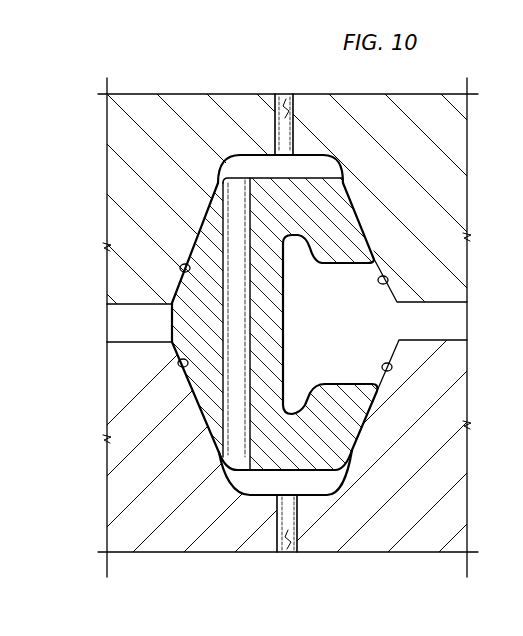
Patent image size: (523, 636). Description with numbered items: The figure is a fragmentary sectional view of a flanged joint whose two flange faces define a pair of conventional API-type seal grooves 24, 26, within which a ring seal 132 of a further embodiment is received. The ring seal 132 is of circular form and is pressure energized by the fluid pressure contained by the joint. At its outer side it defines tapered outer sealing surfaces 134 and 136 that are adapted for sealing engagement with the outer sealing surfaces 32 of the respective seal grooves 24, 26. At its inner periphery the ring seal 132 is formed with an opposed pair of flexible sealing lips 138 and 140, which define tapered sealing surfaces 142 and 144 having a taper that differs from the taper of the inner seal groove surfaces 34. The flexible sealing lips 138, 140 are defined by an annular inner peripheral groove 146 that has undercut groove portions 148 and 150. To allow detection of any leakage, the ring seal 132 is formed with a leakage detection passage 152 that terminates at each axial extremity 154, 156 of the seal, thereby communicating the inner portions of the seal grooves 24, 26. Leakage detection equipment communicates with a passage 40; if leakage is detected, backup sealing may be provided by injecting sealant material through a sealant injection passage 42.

The seal groove 24 is at (252, 155).
The seal groove 26 is at (250, 483).
The outer sealing surface 32 is at (180, 268).
The inner seal groove surface 34 is at (388, 279).
The passage 40 is at (285, 108).
The sealant injection passage 42 is at (287, 537).
The ring seal 132 is at (187, 320).
The tapered outer sealing surface 134 is at (197, 235).
The tapered outer sealing surface 136 is at (200, 392).
The flexible sealing lip 138 is at (347, 248).
The flexible sealing lip 140 is at (347, 403).
The tapered sealing surface 142 is at (335, 226).
The tapered sealing surface 144 is at (333, 430).
The annular inner peripheral groove 146 is at (343, 327).
The undercut groove portion 148 is at (300, 243).
The undercut groove portion 150 is at (294, 406).
The leakage detection passage 152 is at (237, 422).
The axial extremity 154 is at (291, 178).
The axial extremity 156 is at (313, 470).